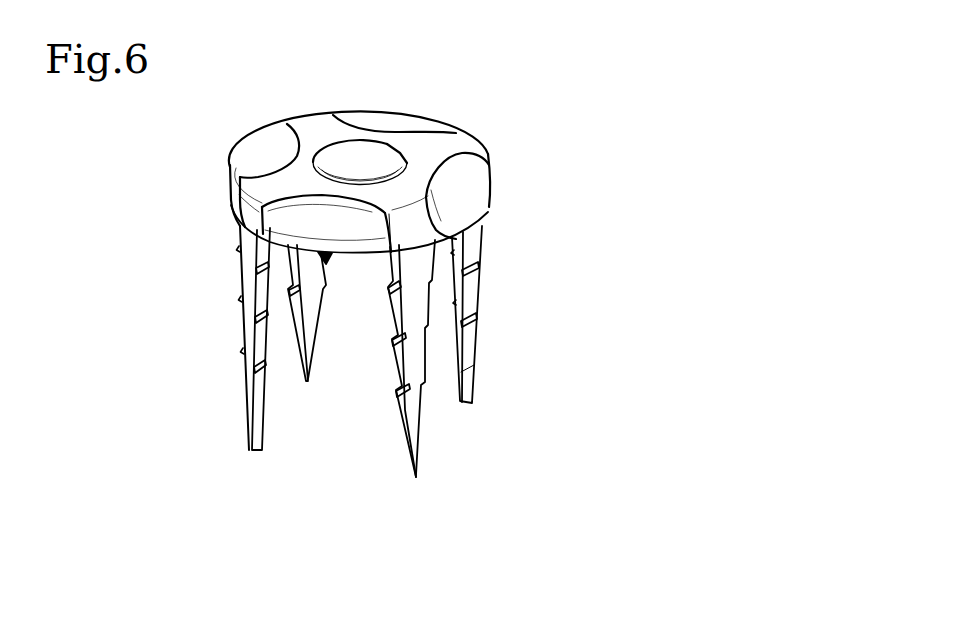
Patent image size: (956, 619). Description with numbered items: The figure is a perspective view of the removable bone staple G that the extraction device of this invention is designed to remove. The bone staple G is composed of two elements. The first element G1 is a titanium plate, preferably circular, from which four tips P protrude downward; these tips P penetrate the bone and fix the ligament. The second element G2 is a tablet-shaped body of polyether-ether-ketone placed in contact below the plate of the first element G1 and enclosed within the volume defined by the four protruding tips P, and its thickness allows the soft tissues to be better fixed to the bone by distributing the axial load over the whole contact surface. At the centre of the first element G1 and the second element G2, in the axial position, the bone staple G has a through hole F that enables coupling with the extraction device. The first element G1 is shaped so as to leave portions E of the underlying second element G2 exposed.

The bone staple G is at (519, 101).
The first element G1 is at (417, 150).
The second element G2 is at (348, 240).
The through hole F is at (357, 150).
The portions E is at (450, 182).
The tips P is at (312, 307).